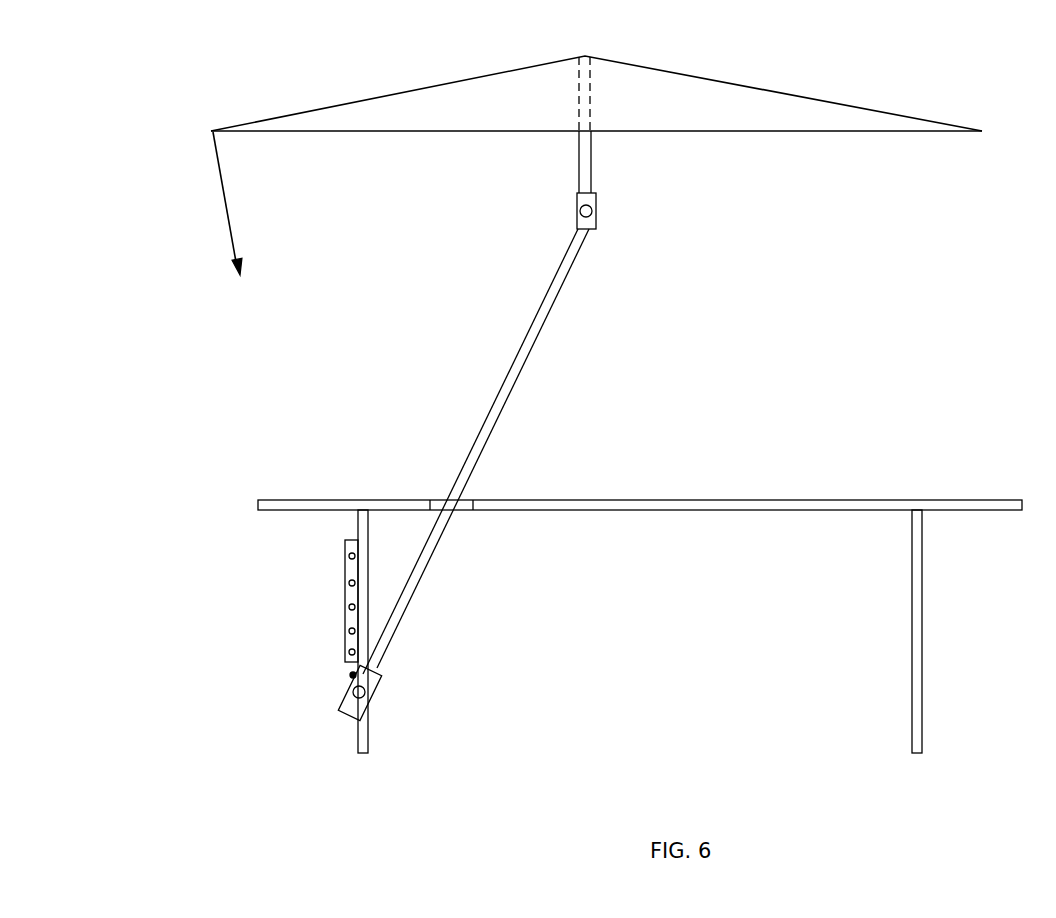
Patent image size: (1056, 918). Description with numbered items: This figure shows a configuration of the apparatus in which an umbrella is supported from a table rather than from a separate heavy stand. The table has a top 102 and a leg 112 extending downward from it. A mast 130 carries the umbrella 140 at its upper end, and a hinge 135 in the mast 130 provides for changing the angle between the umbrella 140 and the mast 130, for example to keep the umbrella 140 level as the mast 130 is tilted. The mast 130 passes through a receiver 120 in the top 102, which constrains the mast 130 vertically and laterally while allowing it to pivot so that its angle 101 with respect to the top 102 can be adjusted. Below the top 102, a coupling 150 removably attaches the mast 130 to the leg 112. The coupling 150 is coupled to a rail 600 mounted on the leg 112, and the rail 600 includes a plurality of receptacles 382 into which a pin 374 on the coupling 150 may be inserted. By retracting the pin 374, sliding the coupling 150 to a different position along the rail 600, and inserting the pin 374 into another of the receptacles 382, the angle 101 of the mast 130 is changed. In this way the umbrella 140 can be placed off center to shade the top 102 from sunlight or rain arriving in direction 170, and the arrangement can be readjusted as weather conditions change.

The umbrella 140 is at (735, 79).
The direction 170 is at (242, 203).
The hinge 135 is at (618, 204).
The mast 130 is at (478, 430).
The receiver 120 is at (490, 484).
The angle 101 is at (450, 455).
The top 102 is at (350, 500).
The leg 112 is at (372, 572).
The receptacles 382 is at (345, 583).
The rail 600 is at (345, 639).
The coupling 150 is at (404, 704).
The pin 374 is at (345, 667).